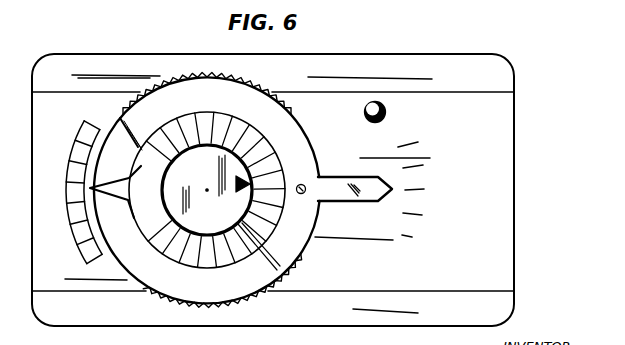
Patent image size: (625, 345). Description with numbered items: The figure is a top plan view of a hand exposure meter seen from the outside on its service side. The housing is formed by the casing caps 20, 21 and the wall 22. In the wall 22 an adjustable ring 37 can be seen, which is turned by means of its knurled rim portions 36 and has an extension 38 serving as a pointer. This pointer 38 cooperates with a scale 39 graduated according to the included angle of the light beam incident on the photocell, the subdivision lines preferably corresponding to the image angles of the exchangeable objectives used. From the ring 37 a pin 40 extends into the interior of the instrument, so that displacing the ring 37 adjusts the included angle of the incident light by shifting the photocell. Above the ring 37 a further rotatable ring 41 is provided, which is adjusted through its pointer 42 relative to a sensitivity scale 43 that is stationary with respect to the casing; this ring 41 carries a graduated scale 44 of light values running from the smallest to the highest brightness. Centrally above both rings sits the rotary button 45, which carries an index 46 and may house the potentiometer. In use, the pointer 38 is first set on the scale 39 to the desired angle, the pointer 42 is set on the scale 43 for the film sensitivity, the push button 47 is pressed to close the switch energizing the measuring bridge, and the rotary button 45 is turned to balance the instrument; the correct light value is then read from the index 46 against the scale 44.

The casing cap 20 is at (438, 64).
The casing cap 21 is at (126, 317).
The wall 22 is at (514, 146).
The knurled rim portions 36 is at (262, 88).
The ring 37 is at (300, 256).
The pointer 38 is at (357, 197).
The scale 39 is at (413, 237).
The pin 40 is at (307, 184).
The rotatable ring 41 is at (134, 208).
The pointer 42 is at (126, 178).
The sensitivity scale 43 is at (72, 230).
The graduated scale of light values 44 is at (191, 268).
The rotary button 45 is at (182, 185).
The index 46 is at (245, 189).
The push button 47 is at (365, 113).